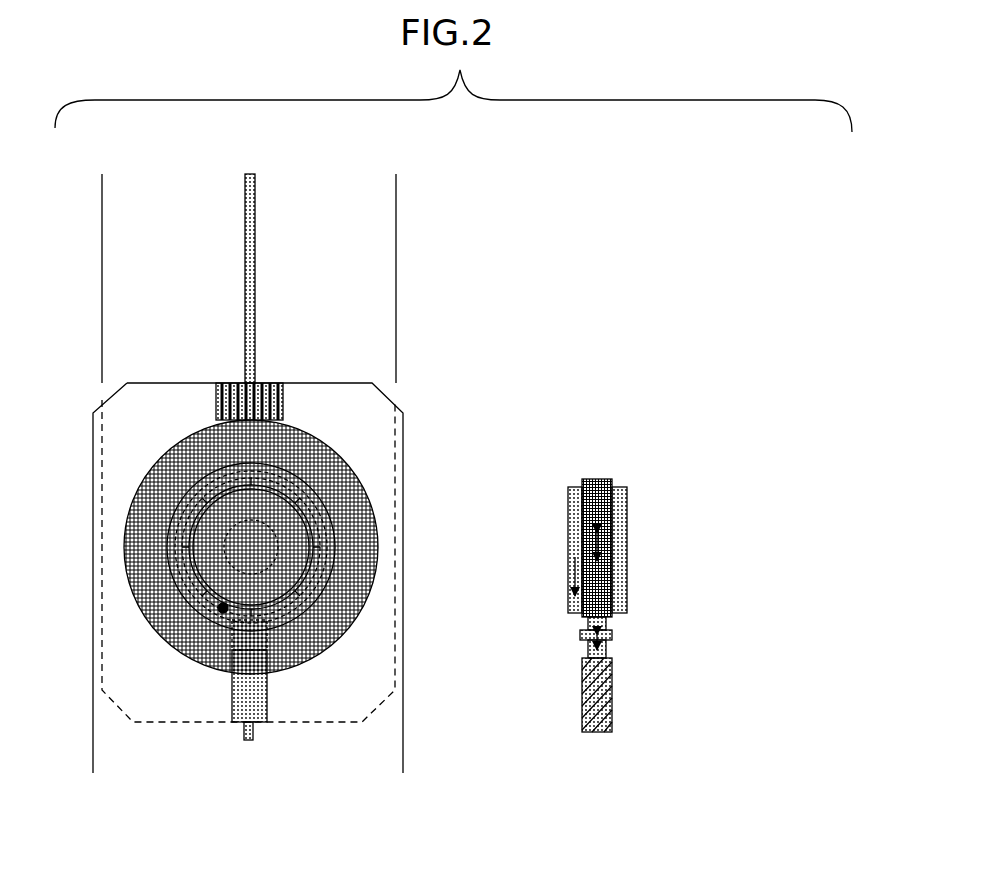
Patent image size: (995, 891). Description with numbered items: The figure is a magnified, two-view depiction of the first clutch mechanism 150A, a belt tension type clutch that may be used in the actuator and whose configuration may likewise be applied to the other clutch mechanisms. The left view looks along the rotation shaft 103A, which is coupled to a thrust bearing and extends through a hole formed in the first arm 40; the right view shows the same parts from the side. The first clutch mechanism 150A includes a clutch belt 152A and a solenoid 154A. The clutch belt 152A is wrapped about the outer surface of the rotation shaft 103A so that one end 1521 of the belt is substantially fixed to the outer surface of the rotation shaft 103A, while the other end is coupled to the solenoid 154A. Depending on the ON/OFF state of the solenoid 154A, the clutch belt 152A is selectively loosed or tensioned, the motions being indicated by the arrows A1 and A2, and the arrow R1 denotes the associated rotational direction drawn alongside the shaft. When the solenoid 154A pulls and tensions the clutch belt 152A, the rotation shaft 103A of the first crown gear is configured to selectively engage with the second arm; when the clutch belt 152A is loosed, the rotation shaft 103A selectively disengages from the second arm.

The first arm 40 is at (396, 237).
The first clutch mechanism 150A is at (284, 645).
The rotation shaft 103A is at (262, 510).
The clutch belt 152A is at (290, 505).
The end of the clutch belt 1521 is at (220, 614).
The solenoid 154A is at (270, 690).
The arrow A1 is at (602, 546).
The arrow A2 is at (606, 648).
The rotation direction R1 is at (572, 578).